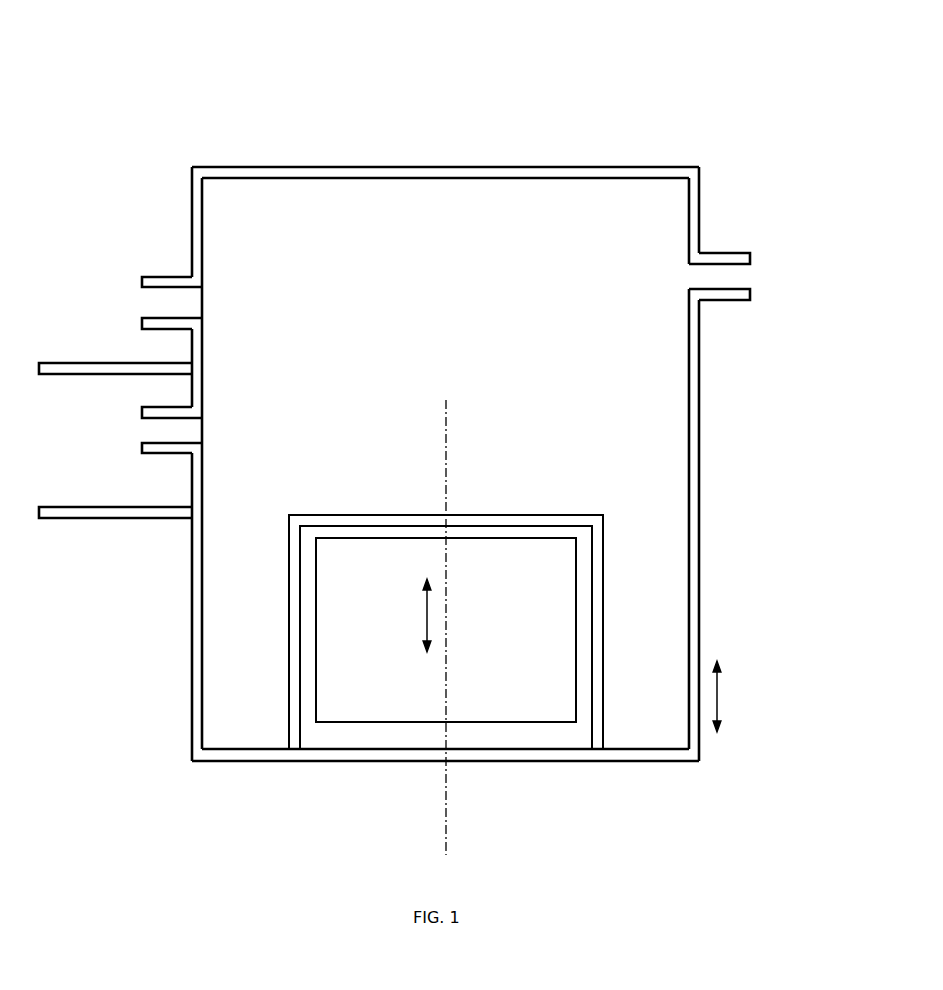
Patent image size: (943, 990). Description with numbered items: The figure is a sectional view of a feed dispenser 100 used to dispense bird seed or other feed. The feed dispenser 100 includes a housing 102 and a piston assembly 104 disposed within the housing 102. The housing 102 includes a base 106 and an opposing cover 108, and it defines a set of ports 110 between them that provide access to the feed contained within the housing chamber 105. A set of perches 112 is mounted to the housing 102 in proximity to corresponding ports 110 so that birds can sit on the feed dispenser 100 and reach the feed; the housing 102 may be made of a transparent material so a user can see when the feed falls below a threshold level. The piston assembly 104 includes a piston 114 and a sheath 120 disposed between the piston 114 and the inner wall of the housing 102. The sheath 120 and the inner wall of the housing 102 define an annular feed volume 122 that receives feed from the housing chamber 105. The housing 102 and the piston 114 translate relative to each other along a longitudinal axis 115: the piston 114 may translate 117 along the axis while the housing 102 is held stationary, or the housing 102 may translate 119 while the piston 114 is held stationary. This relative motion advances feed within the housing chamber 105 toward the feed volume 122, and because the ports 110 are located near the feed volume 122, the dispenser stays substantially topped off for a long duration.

The feed dispenser 100 is at (681, 82).
The housing 102 is at (398, 460).
The piston assembly 104 is at (464, 599).
The housing chamber 105 is at (445, 281).
The base 106 is at (658, 762).
The cover 108 is at (618, 172).
The ports 110 is at (138, 260).
The perches 112 is at (71, 348).
The piston 114 is at (446, 630).
The longitudinal axis 115 is at (446, 811).
The translation of piston 117 is at (426, 618).
The translation of housing 119 is at (718, 694).
The sheath 120 is at (345, 520).
The feed volume 122 is at (448, 591).